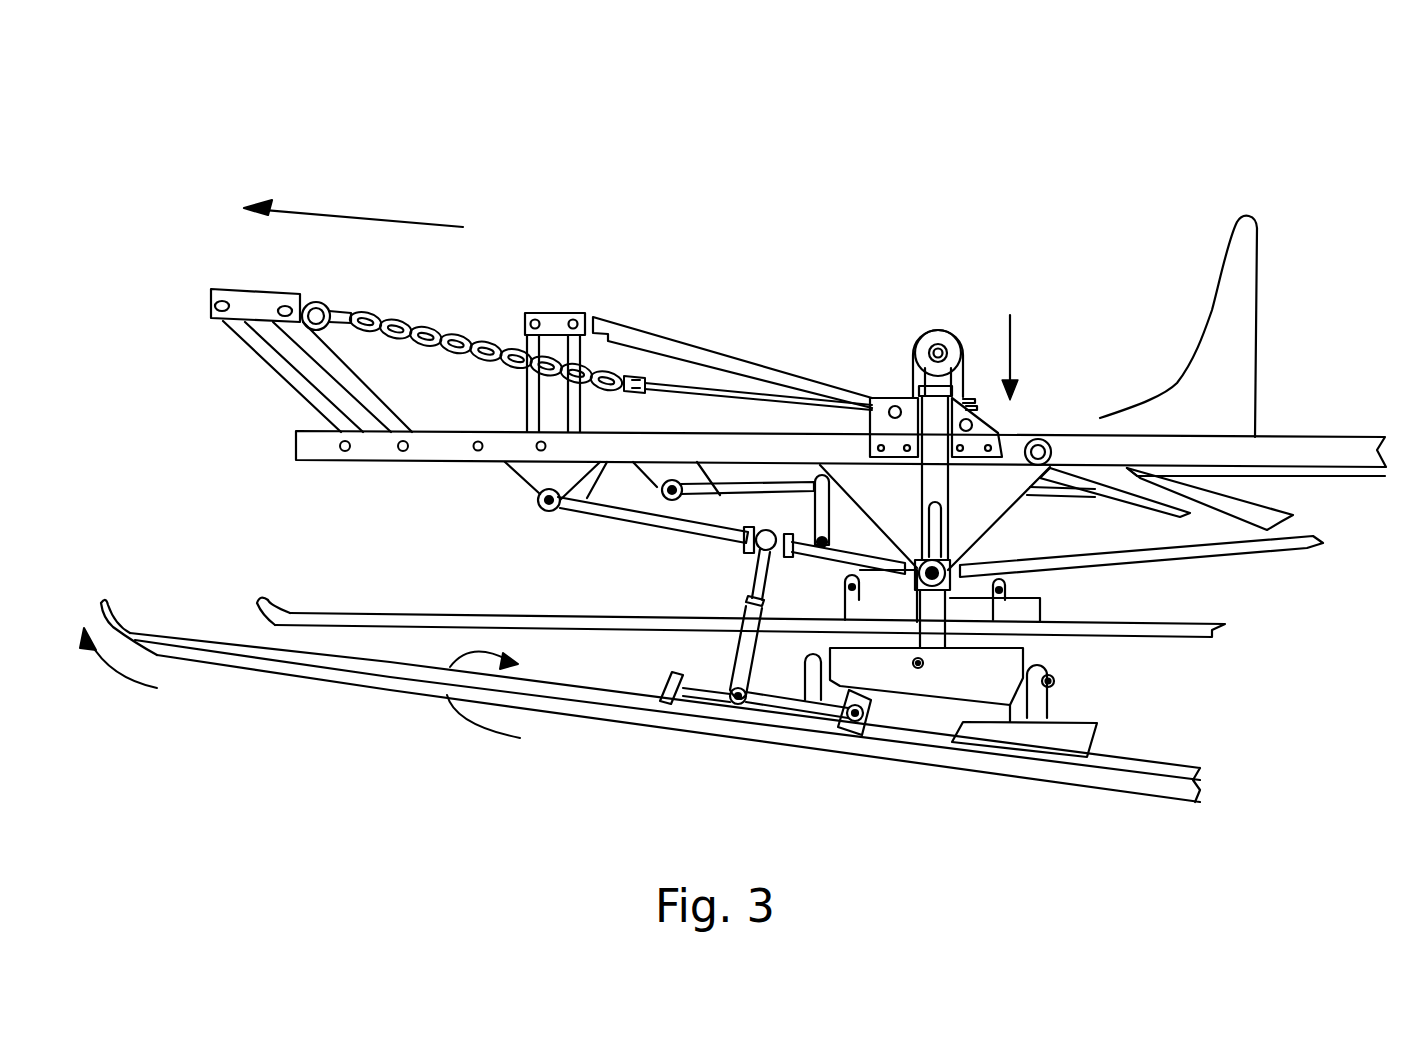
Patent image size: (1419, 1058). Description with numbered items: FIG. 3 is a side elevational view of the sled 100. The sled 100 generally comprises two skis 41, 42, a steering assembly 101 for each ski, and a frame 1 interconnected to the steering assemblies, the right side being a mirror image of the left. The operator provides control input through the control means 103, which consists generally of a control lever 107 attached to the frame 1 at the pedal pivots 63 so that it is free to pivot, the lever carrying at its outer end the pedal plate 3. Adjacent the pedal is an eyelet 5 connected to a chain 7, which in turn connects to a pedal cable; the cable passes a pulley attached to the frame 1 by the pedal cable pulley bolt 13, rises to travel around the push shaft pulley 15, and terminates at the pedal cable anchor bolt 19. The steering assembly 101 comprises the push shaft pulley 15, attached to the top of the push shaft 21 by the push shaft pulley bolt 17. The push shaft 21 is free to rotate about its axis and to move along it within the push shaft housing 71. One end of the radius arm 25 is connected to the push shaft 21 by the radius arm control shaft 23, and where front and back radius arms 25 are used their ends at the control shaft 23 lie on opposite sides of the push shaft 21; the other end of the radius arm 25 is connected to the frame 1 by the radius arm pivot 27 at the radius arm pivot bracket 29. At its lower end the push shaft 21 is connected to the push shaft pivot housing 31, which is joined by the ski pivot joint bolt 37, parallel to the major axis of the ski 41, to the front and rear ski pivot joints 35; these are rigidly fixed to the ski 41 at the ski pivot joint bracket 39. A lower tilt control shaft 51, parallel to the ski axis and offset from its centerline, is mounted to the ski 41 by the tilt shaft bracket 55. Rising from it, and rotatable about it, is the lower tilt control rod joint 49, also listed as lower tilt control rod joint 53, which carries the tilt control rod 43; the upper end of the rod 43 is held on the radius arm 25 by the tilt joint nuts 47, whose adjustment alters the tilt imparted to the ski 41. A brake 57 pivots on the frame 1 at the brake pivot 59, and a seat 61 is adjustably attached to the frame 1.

The frame 1 is at (1268, 434).
The hitch plate 3 is at (212, 305).
The eyelet 5 is at (316, 302).
The chain 7 is at (392, 316).
The pedal cable pulley bolt 13 is at (893, 402).
The push shaft pulley 15 is at (923, 338).
The push shaft pulley bolt 17 is at (946, 350).
The pedal cable anchor bolt 19 is at (978, 418).
The push shaft 21 is at (935, 603).
The radius arm control shaft 23 is at (968, 568).
The radius arm 25 is at (682, 526).
The radius arm pivot 27 is at (549, 511).
The radius arm pivot bracket 29 is at (515, 475).
The push shaft pivot housing 31 is at (1030, 655).
The ski pivot joint 35 is at (1050, 708).
The ski pivot joint bolt 37 is at (1057, 680).
The ski pivot joint bracket 39 is at (1110, 740).
The left ski 41 is at (343, 690).
The right ski 42 is at (420, 613).
The tilt control rod 43 is at (745, 595).
The tilt joint nuts 47 is at (787, 512).
The lower tilt control rod joint 49 is at (722, 665).
The lower tilt control shaft 51 is at (772, 715).
The lower tilt control rod joint 53 is at (742, 706).
The tilt shaft bracket 55 is at (853, 728).
The brake 57 is at (626, 318).
The brake pivot 59 is at (1052, 452).
The seat 61 is at (1258, 272).
The pedal pivots 63 is at (345, 452).
The push shaft housing 71 is at (950, 483).
The sled 100 is at (693, 288).
The left steering assembly 101 is at (944, 306).
The left control means 103 is at (246, 347).
The control lever 107 is at (300, 395).